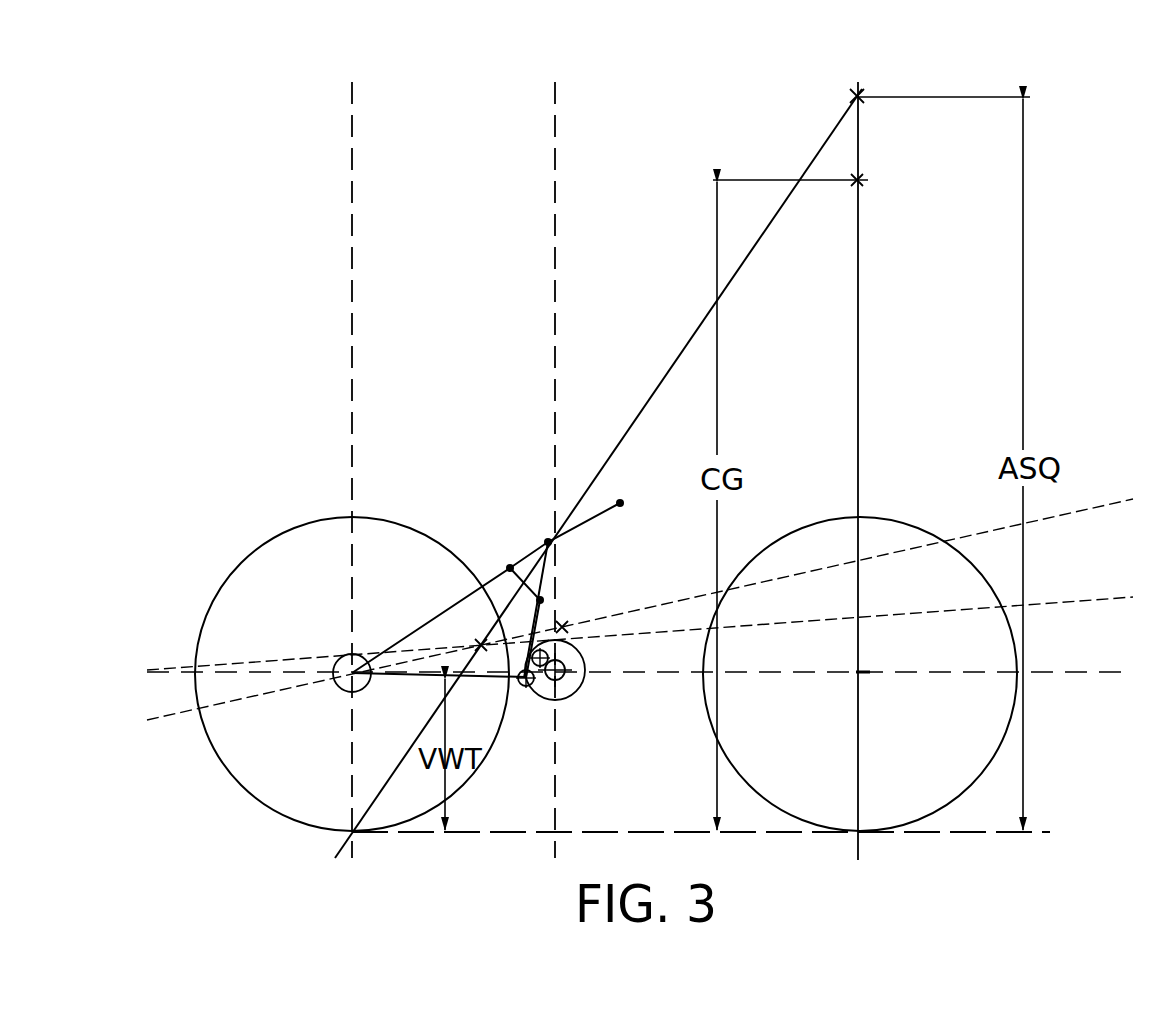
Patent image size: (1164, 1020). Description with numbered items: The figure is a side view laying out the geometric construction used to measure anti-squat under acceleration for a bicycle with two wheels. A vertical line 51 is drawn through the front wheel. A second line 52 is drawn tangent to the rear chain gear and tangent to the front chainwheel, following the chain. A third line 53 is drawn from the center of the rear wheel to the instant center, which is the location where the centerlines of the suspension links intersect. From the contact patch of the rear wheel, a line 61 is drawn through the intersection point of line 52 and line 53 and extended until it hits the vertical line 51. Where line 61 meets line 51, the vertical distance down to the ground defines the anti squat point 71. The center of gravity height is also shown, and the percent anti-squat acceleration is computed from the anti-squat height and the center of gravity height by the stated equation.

The vertical line through the front wheel 51 is at (858, 382).
The chain tangent line 52 is at (1093, 597).
The instant center line 53 is at (1077, 512).
The anti-squat line 61 is at (676, 363).
The anti squat point 71 is at (852, 97).